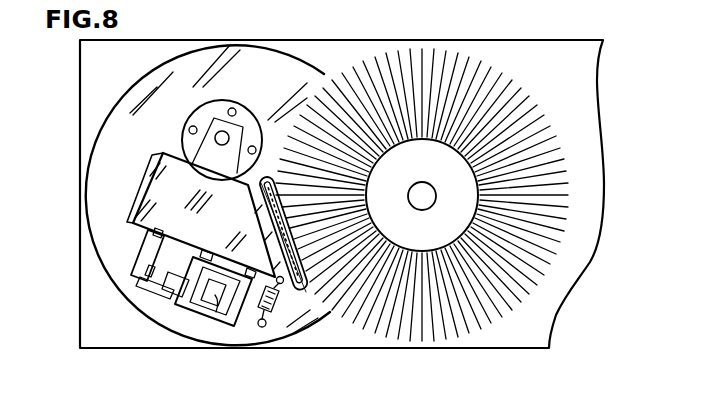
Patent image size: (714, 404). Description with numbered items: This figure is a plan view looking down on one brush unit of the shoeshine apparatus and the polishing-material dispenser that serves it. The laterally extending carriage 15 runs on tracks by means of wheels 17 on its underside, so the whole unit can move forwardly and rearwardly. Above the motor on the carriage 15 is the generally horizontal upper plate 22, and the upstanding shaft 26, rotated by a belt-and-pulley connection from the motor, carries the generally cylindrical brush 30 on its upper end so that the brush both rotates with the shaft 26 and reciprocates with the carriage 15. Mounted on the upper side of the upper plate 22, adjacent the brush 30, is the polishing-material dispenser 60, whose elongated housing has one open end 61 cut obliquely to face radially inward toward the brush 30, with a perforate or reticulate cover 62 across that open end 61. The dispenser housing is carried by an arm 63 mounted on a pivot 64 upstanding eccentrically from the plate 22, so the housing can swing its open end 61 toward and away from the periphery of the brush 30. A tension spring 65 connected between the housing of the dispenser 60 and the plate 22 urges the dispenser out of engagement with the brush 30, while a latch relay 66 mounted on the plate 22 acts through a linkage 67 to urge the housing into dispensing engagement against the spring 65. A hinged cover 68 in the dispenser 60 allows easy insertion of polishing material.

The carriage 15 is at (583, 98).
The wheels 17 is at (582, 0).
The upper plate 22 is at (200, 62).
The upstanding shaft 26 is at (426, 199).
The brush 30 is at (523, 281).
The polishing-material dispenser 60 is at (148, 186).
The open end 61 is at (307, 262).
The perforate cover 62 is at (328, 264).
The arm 63 is at (232, 140).
The pivot 64 is at (222, 133).
The tension spring 65 is at (277, 316).
The latch relay 66 is at (219, 294).
The linkage 67 is at (158, 297).
The hinged cover 68 is at (242, 226).